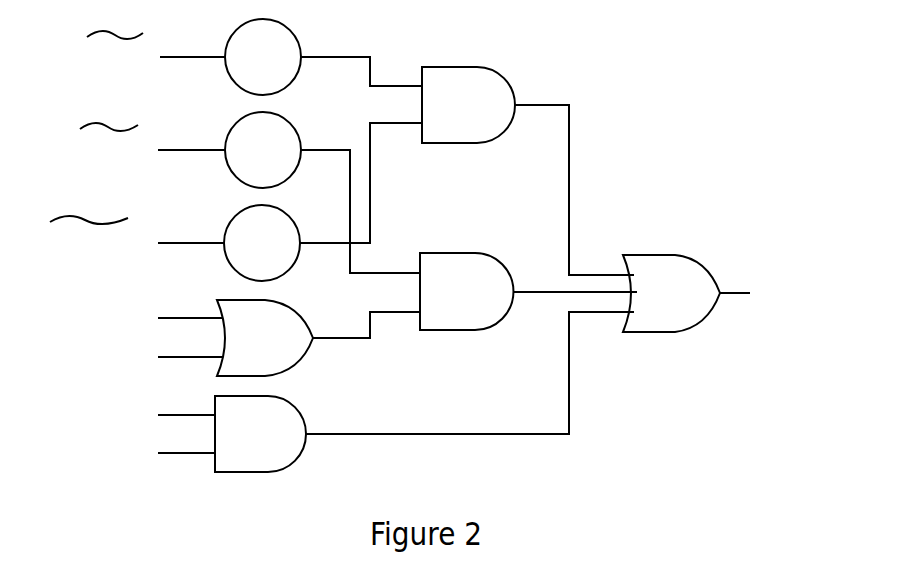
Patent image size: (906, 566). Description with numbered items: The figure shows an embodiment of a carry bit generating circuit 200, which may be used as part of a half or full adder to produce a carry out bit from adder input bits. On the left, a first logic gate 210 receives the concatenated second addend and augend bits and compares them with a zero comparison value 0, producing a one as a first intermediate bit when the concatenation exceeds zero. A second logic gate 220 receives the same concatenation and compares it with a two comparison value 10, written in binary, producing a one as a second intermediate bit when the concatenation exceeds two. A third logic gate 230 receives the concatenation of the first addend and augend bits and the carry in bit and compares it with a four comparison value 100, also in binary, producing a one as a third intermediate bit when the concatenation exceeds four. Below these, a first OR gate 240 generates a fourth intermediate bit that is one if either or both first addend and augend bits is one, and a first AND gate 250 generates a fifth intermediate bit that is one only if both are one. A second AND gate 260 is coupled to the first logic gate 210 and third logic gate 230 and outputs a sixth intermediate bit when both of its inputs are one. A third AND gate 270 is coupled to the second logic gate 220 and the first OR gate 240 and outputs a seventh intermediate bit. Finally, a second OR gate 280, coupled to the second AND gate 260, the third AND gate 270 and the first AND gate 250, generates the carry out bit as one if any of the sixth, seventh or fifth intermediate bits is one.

The carry bit generating circuit 200 is at (779, 60).
The first logic gate 210 is at (247, 57).
The second logic gate 220 is at (239, 152).
The third logic gate 230 is at (232, 245).
The first OR gate 240 is at (240, 350).
The first AND gate 250 is at (240, 445).
The second AND gate 260 is at (446, 117).
The third AND gate 270 is at (446, 305).
The second OR gate 280 is at (649, 305).
The zero comparison value 0 is at (229, 73).
The two comparison value 10 is at (229, 166).
The four comparison value 100 is at (281, 255).